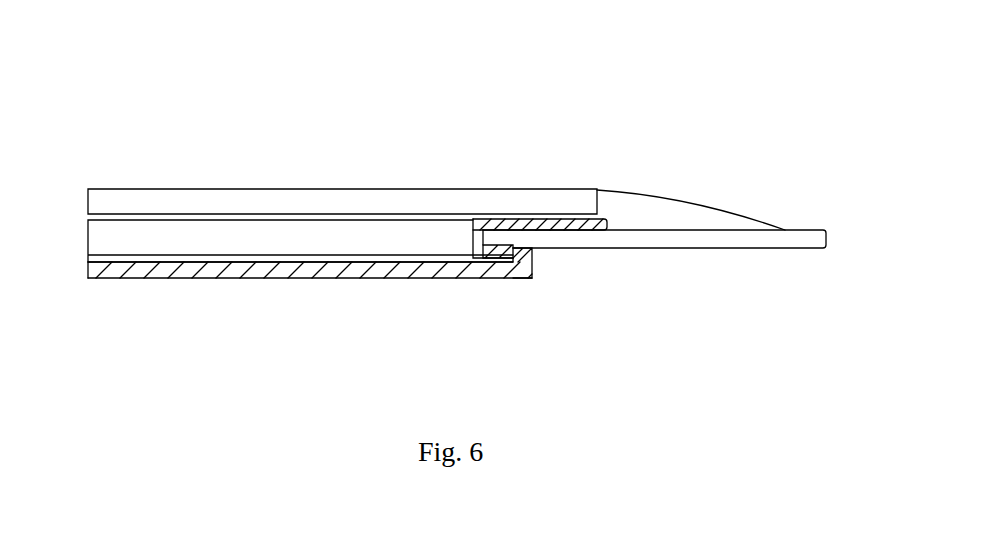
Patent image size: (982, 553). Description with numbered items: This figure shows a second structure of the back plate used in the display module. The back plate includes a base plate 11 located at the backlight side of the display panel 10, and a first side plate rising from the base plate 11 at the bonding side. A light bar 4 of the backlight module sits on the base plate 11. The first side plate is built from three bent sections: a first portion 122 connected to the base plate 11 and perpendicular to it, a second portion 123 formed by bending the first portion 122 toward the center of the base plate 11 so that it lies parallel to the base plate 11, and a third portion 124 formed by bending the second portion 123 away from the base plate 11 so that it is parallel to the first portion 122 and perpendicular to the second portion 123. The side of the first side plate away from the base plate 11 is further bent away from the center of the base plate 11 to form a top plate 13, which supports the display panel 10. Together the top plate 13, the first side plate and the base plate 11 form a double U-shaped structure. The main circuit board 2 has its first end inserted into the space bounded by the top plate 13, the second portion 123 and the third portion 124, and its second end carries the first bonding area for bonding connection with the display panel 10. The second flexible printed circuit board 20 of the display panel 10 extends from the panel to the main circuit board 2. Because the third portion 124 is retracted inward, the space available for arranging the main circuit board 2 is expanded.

The display panel 10 is at (180, 188).
The second flexible printed circuit board 20 is at (718, 207).
The top plate 13 is at (562, 213).
The third portion 124 is at (468, 231).
The second portion 123 is at (502, 243).
The main circuit board 2 is at (673, 248).
The light bar 4 is at (127, 267).
The first portion 122 is at (532, 265).
The base plate 11 is at (220, 282).